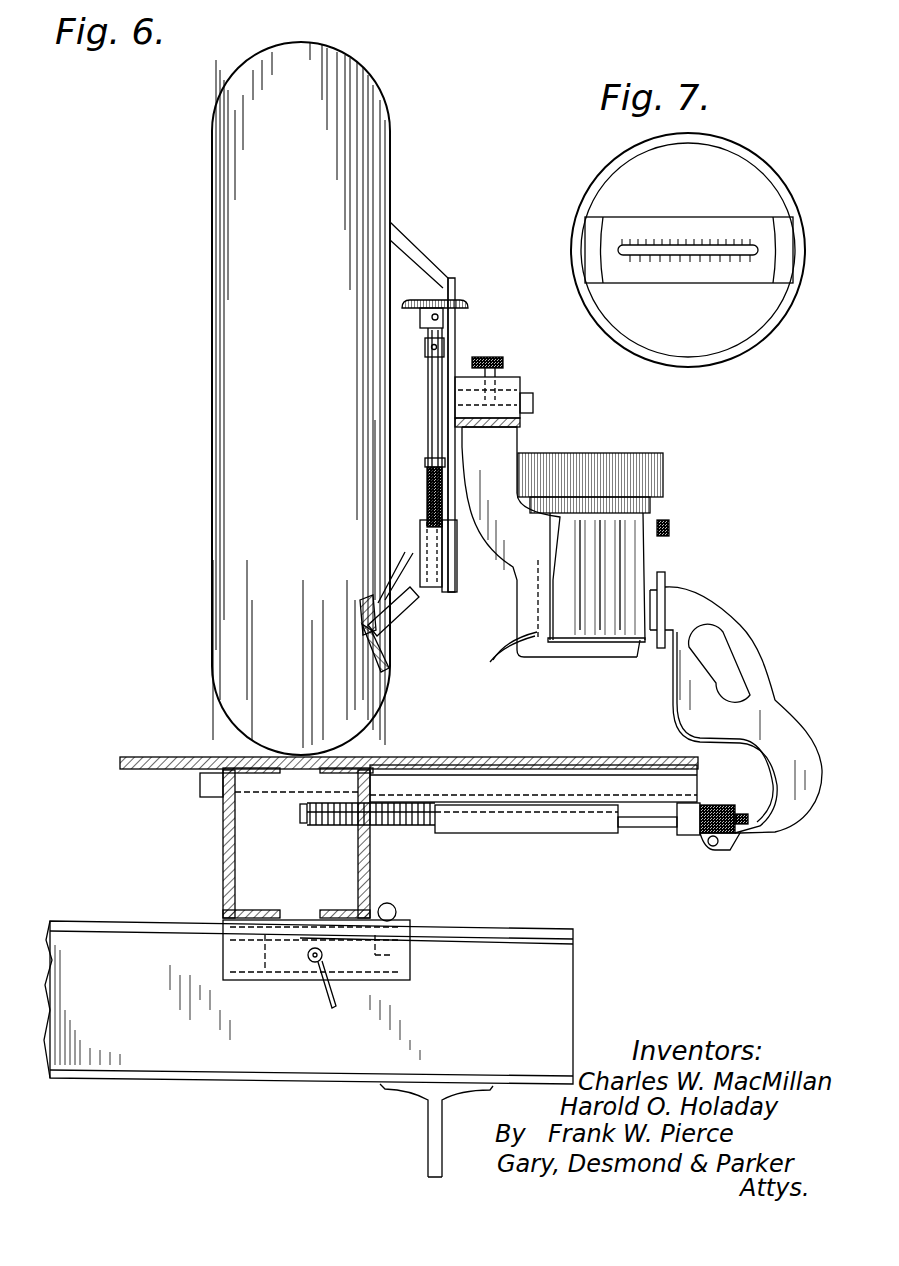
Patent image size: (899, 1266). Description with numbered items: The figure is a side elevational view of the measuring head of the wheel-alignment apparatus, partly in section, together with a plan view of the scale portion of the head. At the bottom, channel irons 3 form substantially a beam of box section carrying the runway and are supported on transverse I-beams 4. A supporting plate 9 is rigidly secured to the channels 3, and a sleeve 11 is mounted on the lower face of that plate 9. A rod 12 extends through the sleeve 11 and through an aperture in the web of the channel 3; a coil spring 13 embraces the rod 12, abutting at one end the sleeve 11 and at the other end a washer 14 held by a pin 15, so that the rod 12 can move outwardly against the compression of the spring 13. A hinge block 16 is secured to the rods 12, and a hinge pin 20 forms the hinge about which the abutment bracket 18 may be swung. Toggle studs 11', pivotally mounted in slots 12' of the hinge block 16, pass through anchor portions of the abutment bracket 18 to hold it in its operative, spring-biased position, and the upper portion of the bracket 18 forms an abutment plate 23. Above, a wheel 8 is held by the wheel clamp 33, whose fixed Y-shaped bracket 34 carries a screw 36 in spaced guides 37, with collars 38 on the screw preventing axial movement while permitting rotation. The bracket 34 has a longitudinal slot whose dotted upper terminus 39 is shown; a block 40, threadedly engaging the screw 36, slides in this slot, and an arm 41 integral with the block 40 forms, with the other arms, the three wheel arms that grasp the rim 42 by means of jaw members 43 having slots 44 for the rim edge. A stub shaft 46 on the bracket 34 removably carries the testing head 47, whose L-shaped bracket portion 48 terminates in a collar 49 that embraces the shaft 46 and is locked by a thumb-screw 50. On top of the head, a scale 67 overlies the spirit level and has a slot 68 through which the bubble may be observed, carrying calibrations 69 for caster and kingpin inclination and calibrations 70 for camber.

In FIG. 6, the wheel 8 is at (393, 185).
In FIG. 6, the wheel clamp 33 is at (462, 309).
In FIG. 6, the fixed bracket 34 is at (462, 341).
In FIG. 6, the screw 36 is at (428, 420).
In FIG. 6, the guides 37 is at (425, 350).
In FIG. 6, the collars 38 is at (422, 322).
In FIG. 6, the upper terminus of the slot 39 is at (448, 480).
In FIG. 6, the block 40 is at (457, 575).
In FIG. 6, the arm 41 is at (400, 585).
In FIG. 6, the rim 42 is at (385, 615).
In FIG. 6, the jaw members 43 is at (390, 640).
In FIG. 6, the slots 44 is at (368, 625).
In FIG. 6, the stub shaft 46 is at (530, 394).
In FIG. 6, the testing head 47 is at (625, 440).
In FIG. 6, the bracket portion 48 is at (525, 447).
In FIG. 6, the collar 49 is at (503, 377).
In FIG. 6, the thumb-screw 50 is at (476, 366).
In FIG. 6, the abutment plate 23 is at (660, 578).
In FIG. 6, the abutment bracket 18 is at (780, 667).
In FIG. 6, the supporting plate 9 is at (565, 788).
In FIG. 6, the channel irons 3 is at (223, 868).
In FIG. 6, the I-beams 4 is at (584, 993).
In FIG. 6, the sleeve 11 is at (526, 838).
In FIG. 6, the toggle studs 11' is at (713, 805).
In FIG. 6, the rod 12 is at (641, 844).
In FIG. 6, the slots 12' is at (680, 849).
In FIG. 6, the coil spring 13 is at (395, 828).
In FIG. 6, the washer 14 is at (310, 817).
In FIG. 6, the pin 15 is at (300, 812).
In FIG. 6, the hinge block 16 is at (700, 835).
In FIG. 6, the hinge pin 20 is at (713, 848).
In FIG. 7, the scale 67 is at (610, 220).
In FIG. 7, the slot 68 is at (625, 250).
In FIG. 7, the calibrations 69 is at (680, 228).
In FIG. 7, the calibrations 70 is at (660, 272).